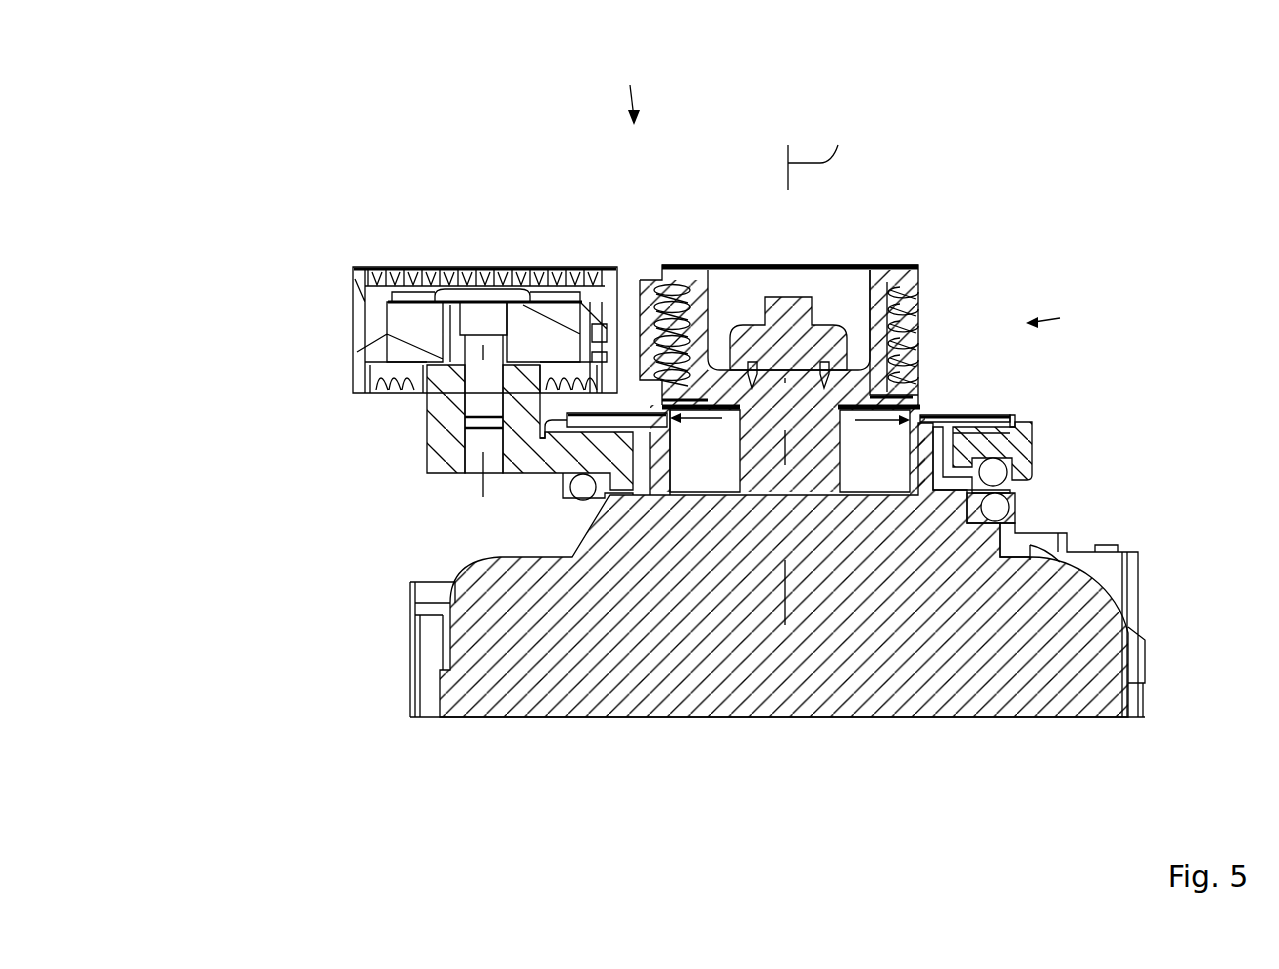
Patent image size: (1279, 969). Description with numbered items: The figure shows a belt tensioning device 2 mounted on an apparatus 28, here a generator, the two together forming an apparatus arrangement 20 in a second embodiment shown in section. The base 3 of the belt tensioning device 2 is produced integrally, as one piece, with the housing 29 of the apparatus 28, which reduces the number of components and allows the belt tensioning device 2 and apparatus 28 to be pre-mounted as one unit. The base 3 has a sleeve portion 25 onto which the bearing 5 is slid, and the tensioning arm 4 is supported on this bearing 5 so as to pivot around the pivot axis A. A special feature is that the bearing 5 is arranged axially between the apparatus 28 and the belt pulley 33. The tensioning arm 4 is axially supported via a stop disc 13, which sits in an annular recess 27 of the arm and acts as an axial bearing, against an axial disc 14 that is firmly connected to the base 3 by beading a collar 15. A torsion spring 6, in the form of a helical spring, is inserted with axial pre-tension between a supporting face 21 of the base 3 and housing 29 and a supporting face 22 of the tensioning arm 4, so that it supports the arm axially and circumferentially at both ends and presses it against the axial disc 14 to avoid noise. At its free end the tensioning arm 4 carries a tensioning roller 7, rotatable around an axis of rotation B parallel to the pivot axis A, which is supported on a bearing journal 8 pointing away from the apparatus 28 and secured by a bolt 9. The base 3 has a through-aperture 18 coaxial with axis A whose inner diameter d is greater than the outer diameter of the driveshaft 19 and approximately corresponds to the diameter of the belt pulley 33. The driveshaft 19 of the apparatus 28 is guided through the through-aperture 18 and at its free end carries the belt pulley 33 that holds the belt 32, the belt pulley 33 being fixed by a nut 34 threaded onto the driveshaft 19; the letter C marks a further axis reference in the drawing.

The belt tensioning device 2 is at (1064, 320).
The base 3 is at (1027, 523).
The tensioning arm 4 is at (1020, 443).
The bearing 5 is at (930, 480).
The torsion spring 6 is at (580, 493).
The tensioning roller 7 is at (352, 330).
The bearing journal 8 is at (427, 442).
The bolt 9 is at (485, 320).
The stop disc 13 is at (1013, 416).
The axial disc 14 is at (980, 413).
The collar 15 is at (918, 407).
The through-aperture 18 is at (693, 480).
The driveshaft 19 is at (783, 330).
The apparatus arrangement 20 is at (619, 79).
The supporting face 21 is at (1013, 503).
The supporting face 22 is at (1010, 477).
The sleeve portion 25 is at (683, 440).
The annular recess 27 is at (965, 417).
The apparatus 28 is at (1192, 600).
The housing 29 is at (1110, 600).
The belt 32 is at (907, 312).
The belt pulley 33 is at (877, 272).
The nut 34 is at (833, 337).
The pivot axis A is at (836, 151).
The axis of rotation B is at (483, 486).
The axis C is at (851, 138).
The inner diameter d is at (882, 436).